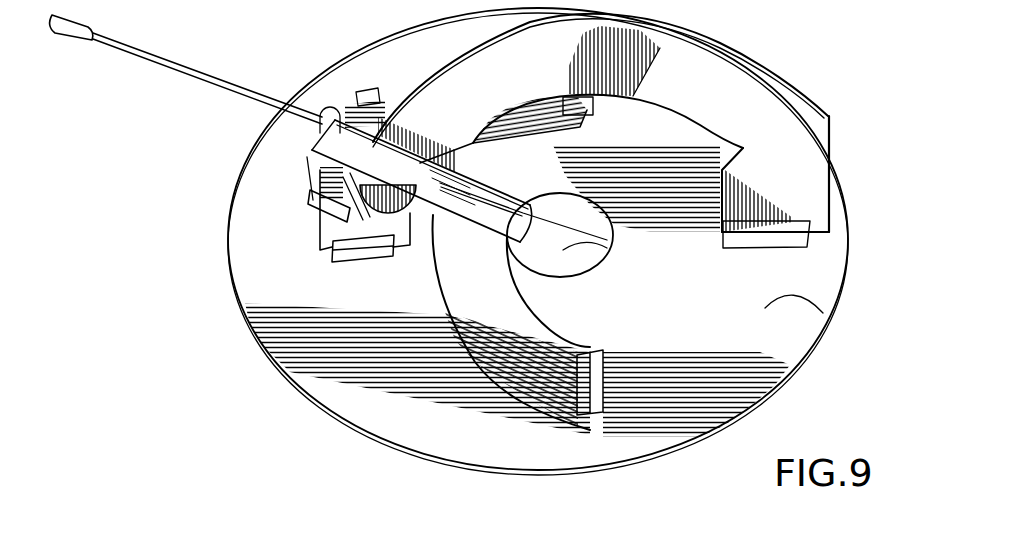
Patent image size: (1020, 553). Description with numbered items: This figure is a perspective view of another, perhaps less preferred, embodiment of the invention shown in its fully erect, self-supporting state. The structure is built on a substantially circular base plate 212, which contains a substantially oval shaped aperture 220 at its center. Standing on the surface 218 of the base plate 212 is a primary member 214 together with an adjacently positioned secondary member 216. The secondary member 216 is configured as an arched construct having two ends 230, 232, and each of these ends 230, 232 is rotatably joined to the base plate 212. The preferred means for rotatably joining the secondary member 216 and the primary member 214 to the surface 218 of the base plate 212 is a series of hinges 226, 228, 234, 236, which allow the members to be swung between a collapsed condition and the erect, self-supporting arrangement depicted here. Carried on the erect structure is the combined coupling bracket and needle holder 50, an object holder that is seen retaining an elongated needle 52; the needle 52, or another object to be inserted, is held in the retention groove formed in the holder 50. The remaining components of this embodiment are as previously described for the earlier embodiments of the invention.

The combined coupling bracket and needle holder 50 is at (358, 97).
The elongated needle 52 is at (133, 46).
The base plate 212 is at (712, 426).
The primary member 214 is at (455, 264).
The secondary member 216 is at (783, 113).
The surface of the base plate 218 is at (770, 202).
The oval shaped aperture 220 is at (593, 250).
The hinge 226 is at (601, 383).
The hinge 228 is at (593, 100).
The end of the secondary member 230 is at (836, 183).
The end of the secondary member 232 is at (327, 252).
The hinge 234 is at (777, 238).
The hinge 236 is at (362, 250).